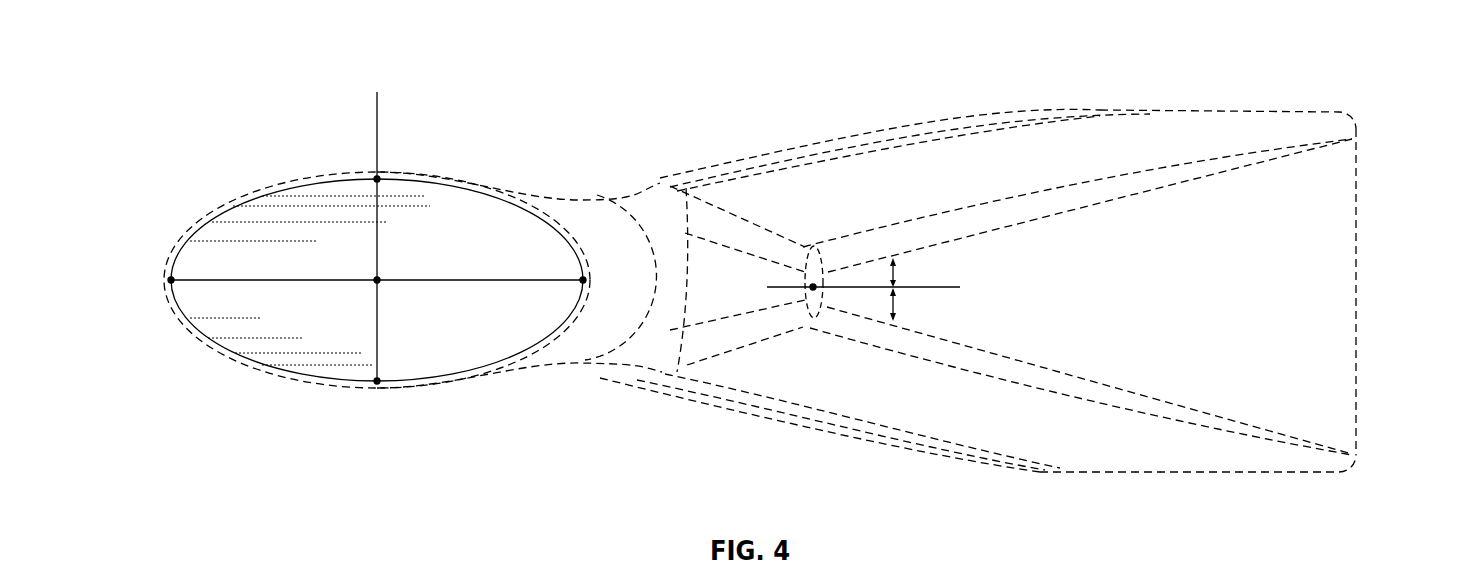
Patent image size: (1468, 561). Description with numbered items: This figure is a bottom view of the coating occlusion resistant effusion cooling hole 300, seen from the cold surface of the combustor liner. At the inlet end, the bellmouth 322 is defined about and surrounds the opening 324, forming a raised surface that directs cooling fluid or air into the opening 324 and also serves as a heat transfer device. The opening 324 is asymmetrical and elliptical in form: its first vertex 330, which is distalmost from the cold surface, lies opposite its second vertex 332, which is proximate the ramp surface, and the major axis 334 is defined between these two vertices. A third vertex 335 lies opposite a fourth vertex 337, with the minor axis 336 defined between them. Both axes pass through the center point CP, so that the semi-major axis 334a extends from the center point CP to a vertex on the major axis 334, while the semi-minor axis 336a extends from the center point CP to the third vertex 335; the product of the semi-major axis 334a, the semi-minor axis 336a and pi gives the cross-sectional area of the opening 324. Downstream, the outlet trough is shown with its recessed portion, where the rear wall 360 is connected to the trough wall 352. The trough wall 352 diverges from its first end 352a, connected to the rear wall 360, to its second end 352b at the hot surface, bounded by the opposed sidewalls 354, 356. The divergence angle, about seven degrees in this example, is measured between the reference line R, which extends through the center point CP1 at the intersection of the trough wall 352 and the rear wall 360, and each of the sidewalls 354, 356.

The effusion cooling hole 300 is at (1368, 70).
The bellmouth 322 is at (458, 387).
The opening 324 is at (475, 216).
The first vertex 330 is at (583, 278).
The second vertex 332 is at (168, 279).
The major axis 334 is at (274, 279).
The semi-major axis 334a is at (440, 282).
The third vertex 335 is at (380, 152).
The minor axis 336 is at (383, 268).
The semi-minor axis 336a is at (376, 200).
The fourth vertex 337 is at (376, 386).
The trough wall 352 is at (1364, 210).
The first end 352a is at (810, 328).
The second end 352b is at (1355, 300).
The sidewall 354 is at (1150, 127).
The sidewall 356 is at (1100, 447).
The rear wall 360 is at (720, 307).
The center point CP is at (375, 281).
The center point CP1 is at (813, 285).
The reference line R is at (853, 287).